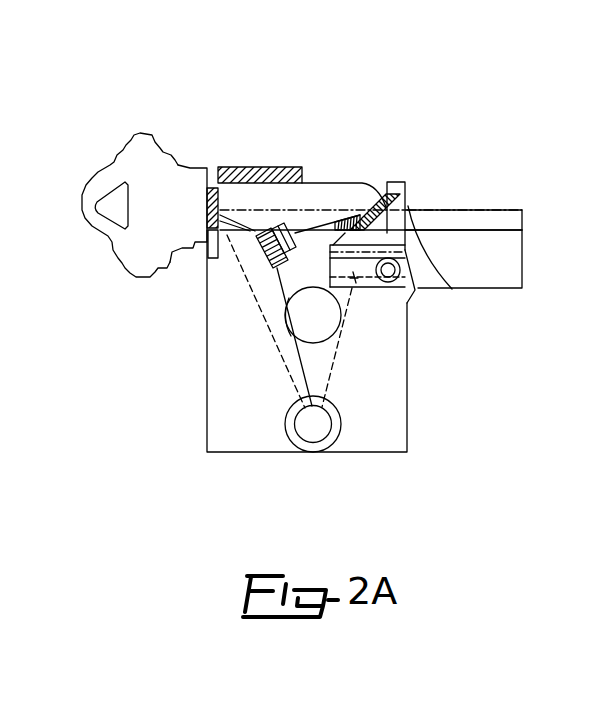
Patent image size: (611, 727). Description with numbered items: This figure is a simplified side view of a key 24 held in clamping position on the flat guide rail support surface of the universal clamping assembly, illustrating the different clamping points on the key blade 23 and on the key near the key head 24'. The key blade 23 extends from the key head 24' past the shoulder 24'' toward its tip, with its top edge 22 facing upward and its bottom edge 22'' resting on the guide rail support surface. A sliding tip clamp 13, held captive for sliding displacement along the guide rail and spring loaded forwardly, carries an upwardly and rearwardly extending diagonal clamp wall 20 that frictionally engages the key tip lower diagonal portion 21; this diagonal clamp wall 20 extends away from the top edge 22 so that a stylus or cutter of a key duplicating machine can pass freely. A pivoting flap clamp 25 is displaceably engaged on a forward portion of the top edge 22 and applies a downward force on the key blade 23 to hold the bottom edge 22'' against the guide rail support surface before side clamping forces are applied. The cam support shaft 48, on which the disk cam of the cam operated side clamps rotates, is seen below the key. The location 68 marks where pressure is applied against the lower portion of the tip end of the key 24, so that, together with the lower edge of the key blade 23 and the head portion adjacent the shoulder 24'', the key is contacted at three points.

The sliding tip clamp 13 is at (408, 197).
The diagonal clamp wall 20 is at (393, 182).
The key tip lower diagonal portion 21 is at (417, 293).
The top edge 22 is at (364, 279).
The bottom edge 22'' is at (223, 277).
The key blade 23 is at (340, 200).
The key 24 is at (156, 199).
The key head 24' is at (130, 168).
The shoulder 24'' is at (207, 162).
The pivoting flap clamp 25 is at (266, 166).
The cam support shaft 48 is at (333, 415).
The tip end clamping location 68 is at (452, 289).